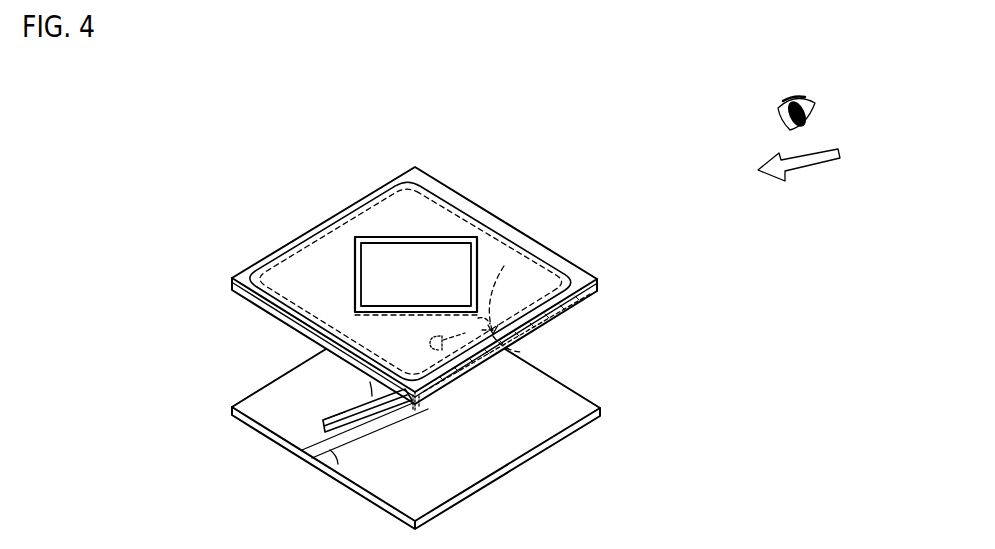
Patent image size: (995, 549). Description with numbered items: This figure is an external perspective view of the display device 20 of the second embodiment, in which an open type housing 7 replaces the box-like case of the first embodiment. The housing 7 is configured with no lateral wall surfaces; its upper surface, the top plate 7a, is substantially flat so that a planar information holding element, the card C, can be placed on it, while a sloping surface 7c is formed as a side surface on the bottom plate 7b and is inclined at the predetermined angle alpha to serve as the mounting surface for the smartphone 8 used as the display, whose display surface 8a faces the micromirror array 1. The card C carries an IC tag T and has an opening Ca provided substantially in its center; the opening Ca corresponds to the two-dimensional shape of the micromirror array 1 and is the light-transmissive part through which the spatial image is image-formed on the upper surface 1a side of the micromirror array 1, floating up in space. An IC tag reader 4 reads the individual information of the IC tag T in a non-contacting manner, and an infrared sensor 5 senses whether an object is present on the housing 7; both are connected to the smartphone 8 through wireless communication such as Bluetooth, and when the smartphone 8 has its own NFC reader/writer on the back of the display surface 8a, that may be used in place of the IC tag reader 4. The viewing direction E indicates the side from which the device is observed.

The micromirror array 1 is at (398, 266).
The upper surface of the micromirror array 1a is at (443, 263).
The IC tag reader 4 is at (520, 352).
The infrared sensor 5 is at (440, 401).
The housing 7 is at (612, 362).
The upper surface (top plate) of the housing 7a is at (232, 283).
The bottom plate 7b is at (600, 406).
The sloping surface 7c is at (360, 434).
The smartphone 8 is at (323, 426).
The display surface of the display 8a is at (353, 405).
The display device 20 is at (220, 352).
The card C is at (327, 210).
The opening Ca is at (363, 272).
The IC tag T is at (504, 266).
The viewing direction E is at (799, 156).